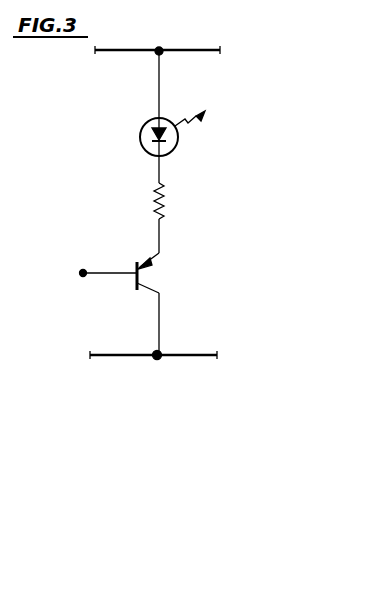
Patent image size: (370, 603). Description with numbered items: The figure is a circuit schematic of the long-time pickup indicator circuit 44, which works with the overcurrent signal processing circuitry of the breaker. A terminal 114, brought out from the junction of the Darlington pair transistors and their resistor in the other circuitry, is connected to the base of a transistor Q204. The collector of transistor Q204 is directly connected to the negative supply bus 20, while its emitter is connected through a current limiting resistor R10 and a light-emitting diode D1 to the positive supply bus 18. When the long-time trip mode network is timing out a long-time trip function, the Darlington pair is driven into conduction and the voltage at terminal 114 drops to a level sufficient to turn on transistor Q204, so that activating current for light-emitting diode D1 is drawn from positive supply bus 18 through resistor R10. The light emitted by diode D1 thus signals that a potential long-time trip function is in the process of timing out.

The positive supply bus 18 is at (195, 48).
The light-emitting diode D1 is at (147, 125).
The long-time pickup indicator circuit 44 is at (215, 158).
The current limiting resistor R10 is at (165, 201).
The transistor Q204 is at (135, 283).
The terminal 114 is at (83, 269).
The ground line 20 is at (176, 358).